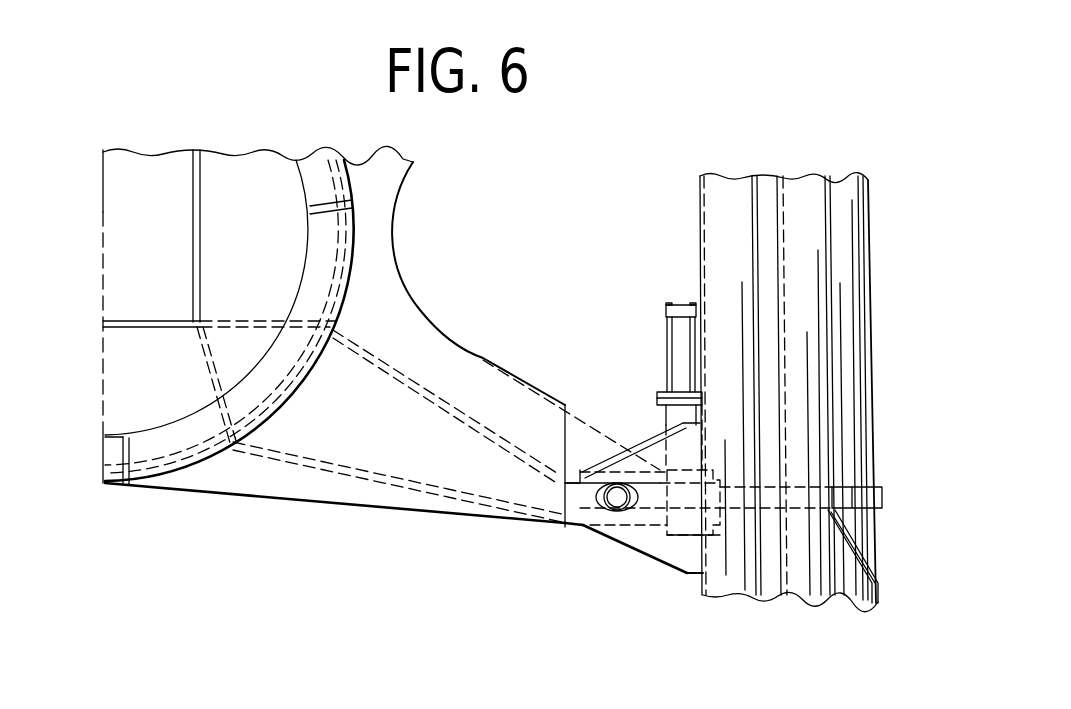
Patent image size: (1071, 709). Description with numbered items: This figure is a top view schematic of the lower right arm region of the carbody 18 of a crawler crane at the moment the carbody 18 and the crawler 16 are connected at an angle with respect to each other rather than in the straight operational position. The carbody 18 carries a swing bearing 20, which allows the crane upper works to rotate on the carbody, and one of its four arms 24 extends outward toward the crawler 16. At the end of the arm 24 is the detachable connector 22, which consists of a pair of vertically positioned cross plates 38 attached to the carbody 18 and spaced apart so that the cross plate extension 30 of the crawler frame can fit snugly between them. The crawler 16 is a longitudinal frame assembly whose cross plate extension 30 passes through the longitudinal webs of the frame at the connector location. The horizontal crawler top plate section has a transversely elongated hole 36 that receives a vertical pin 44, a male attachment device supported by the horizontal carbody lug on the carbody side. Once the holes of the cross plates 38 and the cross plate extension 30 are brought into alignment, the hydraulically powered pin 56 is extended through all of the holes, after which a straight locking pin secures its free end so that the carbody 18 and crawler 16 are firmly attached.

The crawler 16 is at (870, 323).
The carbody 18 is at (207, 492).
The swing bearing 20 is at (316, 175).
The connector 22 is at (647, 558).
The arm 24 is at (448, 515).
The cross plate extension 30 is at (682, 497).
The hole 36 is at (597, 507).
The cross plate 38 is at (652, 477).
The vertical pin 44 is at (617, 493).
The hydraulically powered pin 56 is at (688, 538).